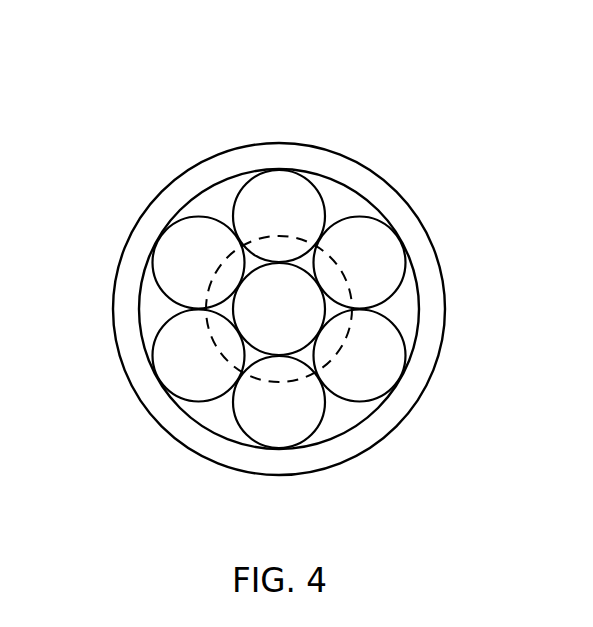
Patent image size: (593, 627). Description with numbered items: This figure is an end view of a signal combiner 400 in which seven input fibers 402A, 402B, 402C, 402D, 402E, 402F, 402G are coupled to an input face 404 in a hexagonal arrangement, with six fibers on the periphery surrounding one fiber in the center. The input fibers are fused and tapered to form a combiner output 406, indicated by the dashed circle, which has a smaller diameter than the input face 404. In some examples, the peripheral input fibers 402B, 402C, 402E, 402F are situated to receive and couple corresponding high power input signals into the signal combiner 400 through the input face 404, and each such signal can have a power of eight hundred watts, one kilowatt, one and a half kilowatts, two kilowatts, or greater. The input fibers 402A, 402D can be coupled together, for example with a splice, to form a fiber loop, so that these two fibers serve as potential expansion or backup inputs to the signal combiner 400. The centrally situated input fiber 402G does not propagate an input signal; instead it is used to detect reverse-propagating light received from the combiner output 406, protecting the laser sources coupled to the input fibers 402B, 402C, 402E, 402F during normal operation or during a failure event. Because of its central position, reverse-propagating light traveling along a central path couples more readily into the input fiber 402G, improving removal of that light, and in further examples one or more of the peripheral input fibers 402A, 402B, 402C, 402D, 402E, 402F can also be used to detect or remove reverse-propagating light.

The signal combiner 400 is at (131, 432).
The input face 404 is at (218, 202).
The combiner output 406 is at (238, 247).
The input fiber 402A is at (292, 192).
The input fiber 402B is at (372, 240).
The input fiber 402C is at (363, 355).
The input fiber 402D is at (275, 417).
The input fiber 402E is at (187, 353).
The input fiber 402F is at (180, 257).
The centrally situated input fiber 402G is at (260, 320).